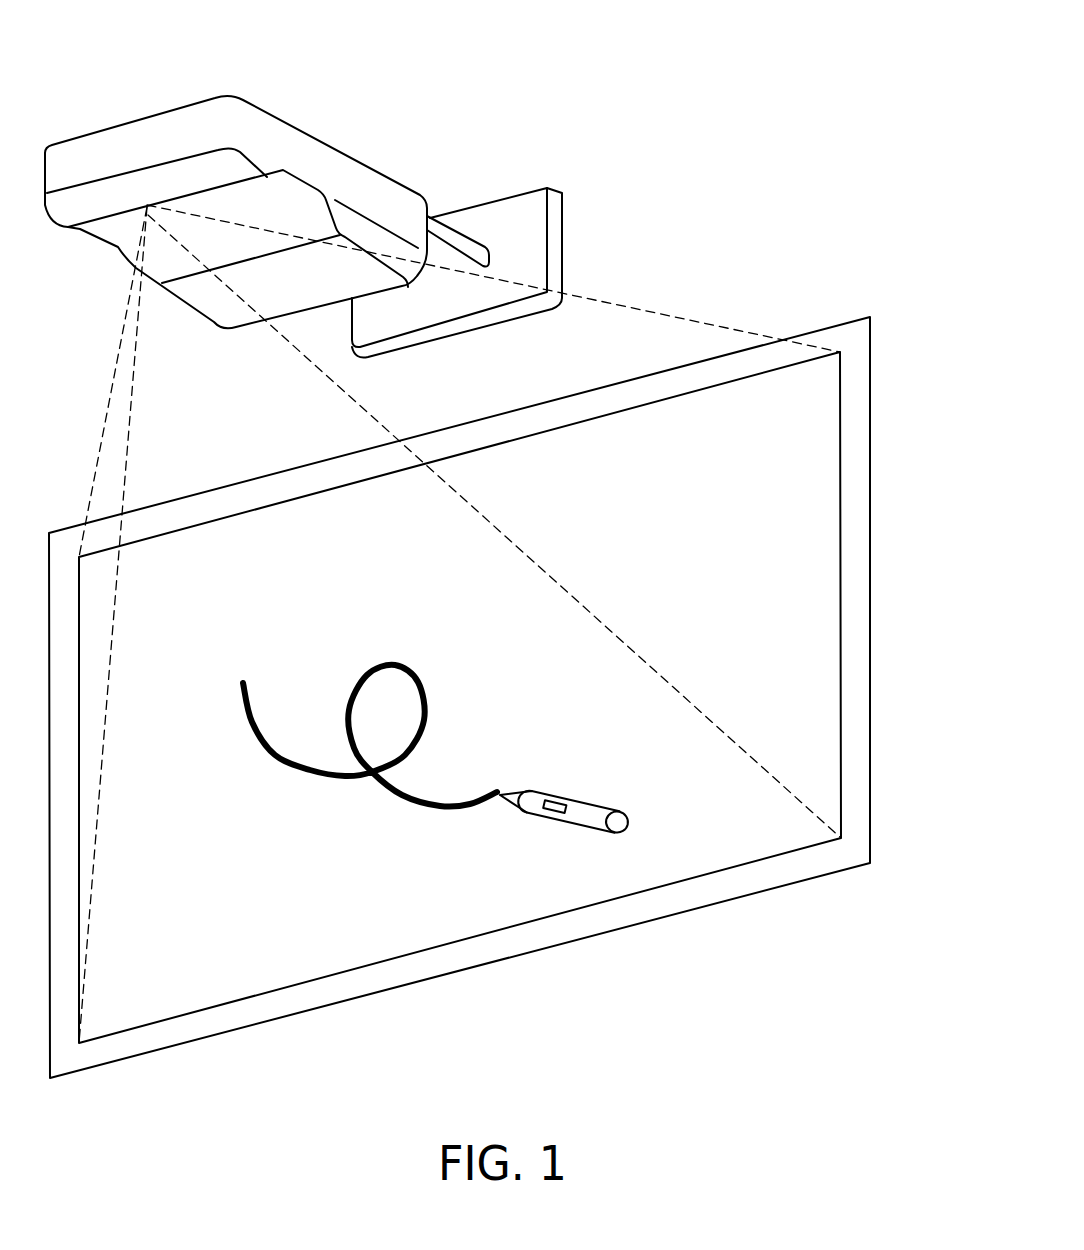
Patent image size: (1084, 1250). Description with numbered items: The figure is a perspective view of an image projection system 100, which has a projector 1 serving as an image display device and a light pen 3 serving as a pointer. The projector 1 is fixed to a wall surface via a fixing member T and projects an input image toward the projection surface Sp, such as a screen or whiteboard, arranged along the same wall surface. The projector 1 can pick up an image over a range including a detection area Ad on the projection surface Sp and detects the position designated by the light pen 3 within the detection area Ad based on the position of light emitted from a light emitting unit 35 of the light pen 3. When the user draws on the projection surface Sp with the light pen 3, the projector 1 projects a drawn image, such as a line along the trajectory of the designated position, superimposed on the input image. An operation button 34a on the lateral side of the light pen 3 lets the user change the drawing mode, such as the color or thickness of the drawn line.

The image projection system 100 is at (742, 38).
The projector 1 is at (143, 130).
The fixing member T is at (463, 240).
The projection surface Sp is at (852, 338).
The detection area Ad is at (823, 468).
The light emitting unit 35 is at (507, 783).
The light pen 3 is at (565, 813).
The operation button 34a is at (548, 814).